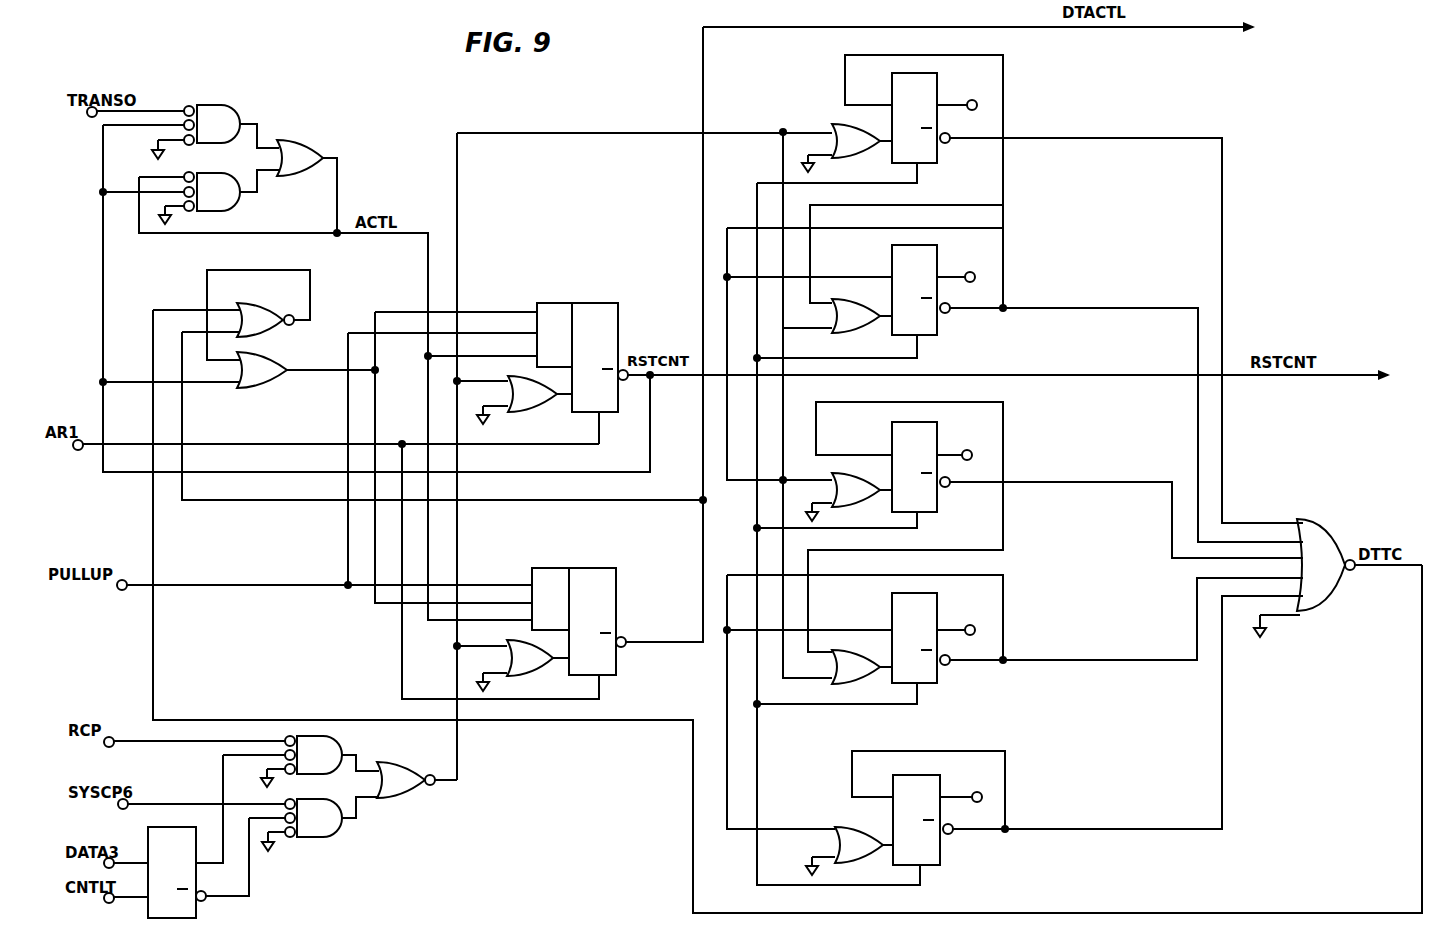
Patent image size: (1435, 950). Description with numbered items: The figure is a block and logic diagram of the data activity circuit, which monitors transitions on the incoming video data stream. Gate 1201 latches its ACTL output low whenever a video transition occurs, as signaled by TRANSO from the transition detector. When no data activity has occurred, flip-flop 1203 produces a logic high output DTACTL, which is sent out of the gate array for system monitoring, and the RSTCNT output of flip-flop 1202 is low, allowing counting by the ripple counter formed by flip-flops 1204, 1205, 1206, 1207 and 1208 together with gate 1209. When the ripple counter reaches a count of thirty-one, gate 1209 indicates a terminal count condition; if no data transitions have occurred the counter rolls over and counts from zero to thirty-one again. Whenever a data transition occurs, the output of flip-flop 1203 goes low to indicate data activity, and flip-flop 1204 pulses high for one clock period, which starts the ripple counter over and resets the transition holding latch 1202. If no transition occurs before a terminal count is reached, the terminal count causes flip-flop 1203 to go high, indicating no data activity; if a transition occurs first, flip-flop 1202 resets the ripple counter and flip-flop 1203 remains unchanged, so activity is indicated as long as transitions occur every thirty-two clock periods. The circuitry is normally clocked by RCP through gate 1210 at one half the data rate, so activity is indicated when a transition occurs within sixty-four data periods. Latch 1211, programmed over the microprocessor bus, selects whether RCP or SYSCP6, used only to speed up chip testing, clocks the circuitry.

The gate 1201 is at (290, 120).
The flip-flop 1202 is at (606, 303).
The flip-flop 1203 is at (598, 568).
The flip-flop 1204 is at (325, 321).
The flip-flop 1205 is at (890, 252).
The flip-flop 1206 is at (893, 423).
The flip-flop 1207 is at (937, 683).
The flip-flop 1208 is at (947, 848).
The gate 1209 is at (1353, 535).
The gate 1210 is at (372, 826).
The latch 1211 is at (212, 910).